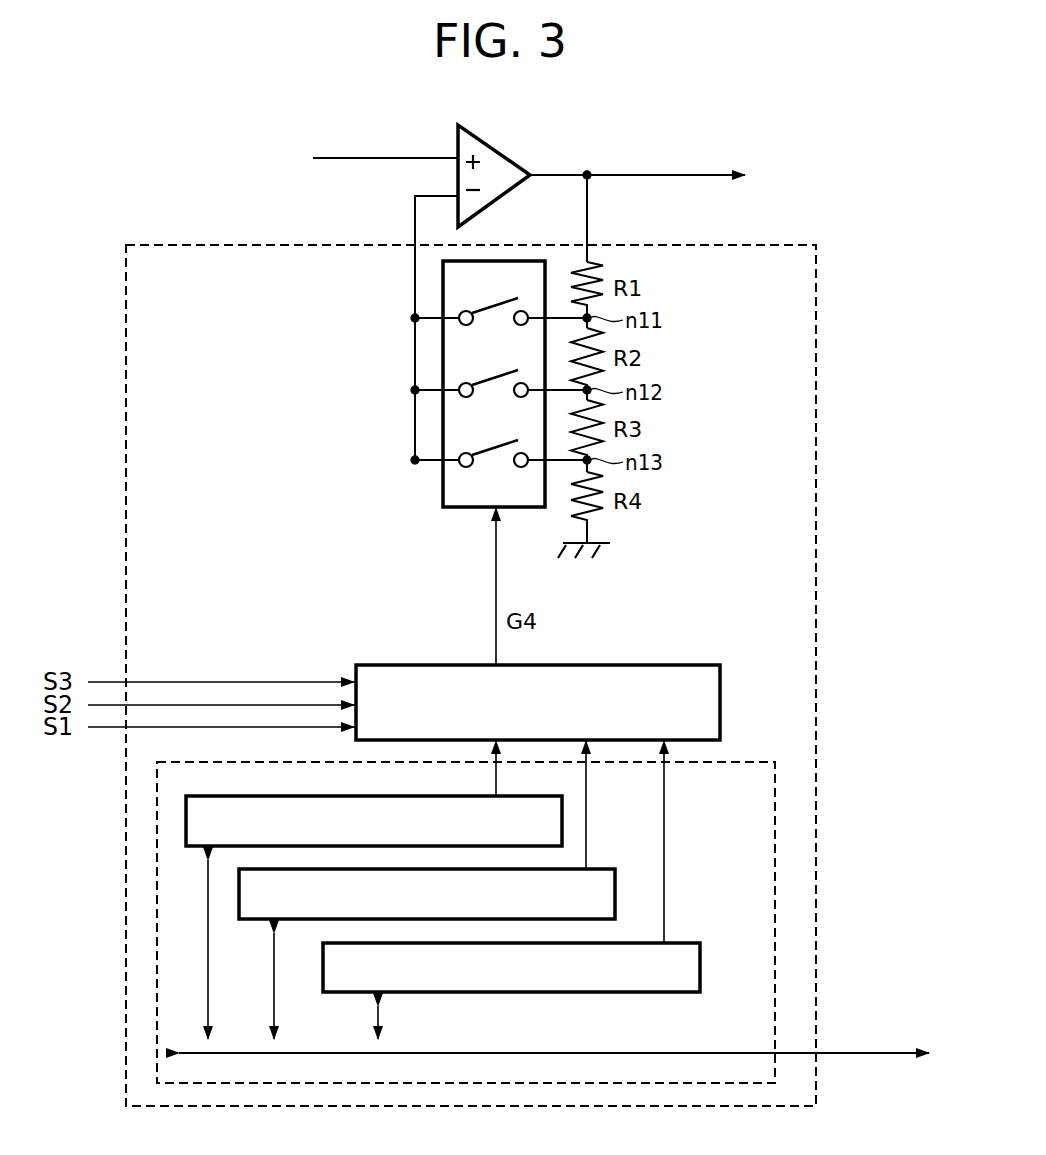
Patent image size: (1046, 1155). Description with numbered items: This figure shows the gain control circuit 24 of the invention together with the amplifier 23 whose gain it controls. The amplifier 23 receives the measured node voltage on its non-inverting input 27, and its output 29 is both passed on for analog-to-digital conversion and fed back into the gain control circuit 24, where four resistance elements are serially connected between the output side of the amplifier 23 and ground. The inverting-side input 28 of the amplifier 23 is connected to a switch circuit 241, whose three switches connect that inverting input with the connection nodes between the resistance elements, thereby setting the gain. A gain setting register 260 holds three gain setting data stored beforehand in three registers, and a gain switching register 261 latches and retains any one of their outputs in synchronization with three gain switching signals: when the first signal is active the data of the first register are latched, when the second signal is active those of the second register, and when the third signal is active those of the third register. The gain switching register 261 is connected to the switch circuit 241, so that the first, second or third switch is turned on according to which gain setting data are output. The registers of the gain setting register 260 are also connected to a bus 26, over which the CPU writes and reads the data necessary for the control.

The amplifier 23 is at (491, 147).
The gain control circuit 24 is at (817, 356).
The bus 26 is at (872, 1052).
The input signal line 27 is at (382, 158).
The feedback line 28 is at (413, 222).
The output signal line 29 is at (549, 175).
The switch circuit 241 is at (456, 510).
The gain setting register 260 is at (745, 762).
The gain switching register 261 is at (637, 664).